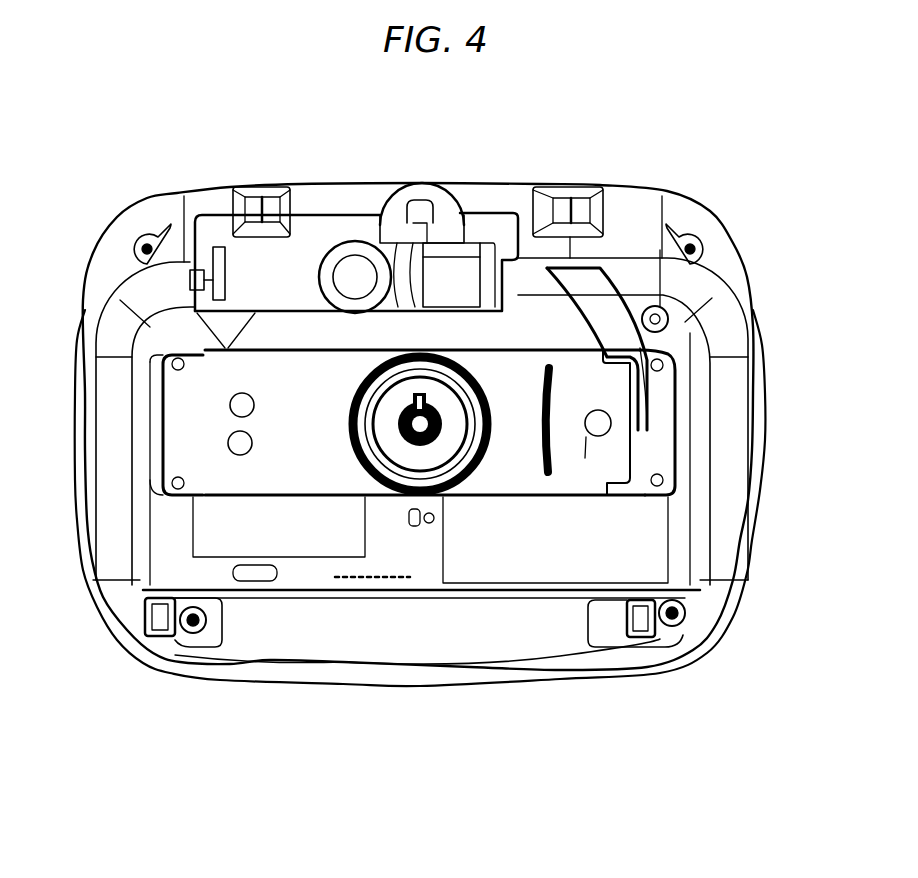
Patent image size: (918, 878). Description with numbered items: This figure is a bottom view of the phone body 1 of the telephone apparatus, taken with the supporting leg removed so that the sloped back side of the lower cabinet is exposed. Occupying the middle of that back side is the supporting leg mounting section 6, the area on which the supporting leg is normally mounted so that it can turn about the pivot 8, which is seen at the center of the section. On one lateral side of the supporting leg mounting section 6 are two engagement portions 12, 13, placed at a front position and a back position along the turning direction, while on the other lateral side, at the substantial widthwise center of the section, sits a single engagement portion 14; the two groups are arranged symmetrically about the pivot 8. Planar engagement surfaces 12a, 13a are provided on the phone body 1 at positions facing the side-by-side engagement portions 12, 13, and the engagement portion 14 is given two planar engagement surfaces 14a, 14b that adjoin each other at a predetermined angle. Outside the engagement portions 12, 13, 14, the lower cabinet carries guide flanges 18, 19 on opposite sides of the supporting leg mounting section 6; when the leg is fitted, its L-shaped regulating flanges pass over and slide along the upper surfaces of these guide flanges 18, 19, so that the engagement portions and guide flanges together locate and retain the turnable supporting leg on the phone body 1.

The phone body 1 is at (738, 244).
The supporting leg mounting section 6 is at (322, 462).
The pivot 8 is at (425, 447).
The engagement portion 12 is at (239, 395).
The planar engagement surface 12a is at (255, 408).
The engagement portion 13 is at (237, 452).
The planar engagement surface 13a is at (253, 441).
The engagement portion 14 is at (608, 418).
The planar engagement surface 14a is at (637, 477).
The planar engagement surface 14b is at (588, 415).
The guide flange 18 is at (205, 405).
The guide flange 19 is at (672, 492).